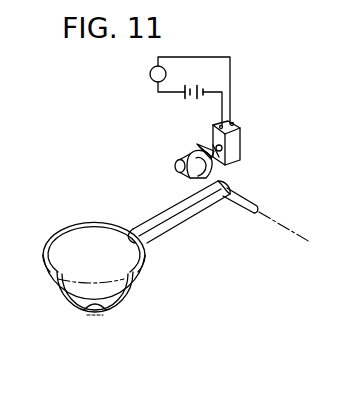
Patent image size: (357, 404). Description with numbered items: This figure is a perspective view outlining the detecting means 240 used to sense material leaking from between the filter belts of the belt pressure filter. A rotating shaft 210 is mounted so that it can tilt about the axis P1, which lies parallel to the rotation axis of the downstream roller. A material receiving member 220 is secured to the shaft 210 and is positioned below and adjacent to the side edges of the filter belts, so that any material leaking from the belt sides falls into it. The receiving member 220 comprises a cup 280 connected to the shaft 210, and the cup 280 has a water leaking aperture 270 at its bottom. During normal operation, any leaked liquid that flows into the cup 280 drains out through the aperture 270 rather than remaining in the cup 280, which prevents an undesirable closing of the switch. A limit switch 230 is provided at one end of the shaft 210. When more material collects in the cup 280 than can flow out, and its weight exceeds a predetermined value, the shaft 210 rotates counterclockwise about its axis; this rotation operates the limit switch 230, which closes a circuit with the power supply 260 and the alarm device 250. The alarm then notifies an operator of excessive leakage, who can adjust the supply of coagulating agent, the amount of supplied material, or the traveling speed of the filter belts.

The rotating shaft 210 is at (245, 194).
The material receiving member 220 is at (149, 306).
The limit switch 230 is at (237, 147).
The detecting means 240 is at (124, 194).
The alarm device 250 is at (150, 73).
The power supply 260 is at (187, 95).
The water leaking aperture 270 is at (93, 320).
The cup 280 is at (53, 285).
The axis P1 is at (268, 222).